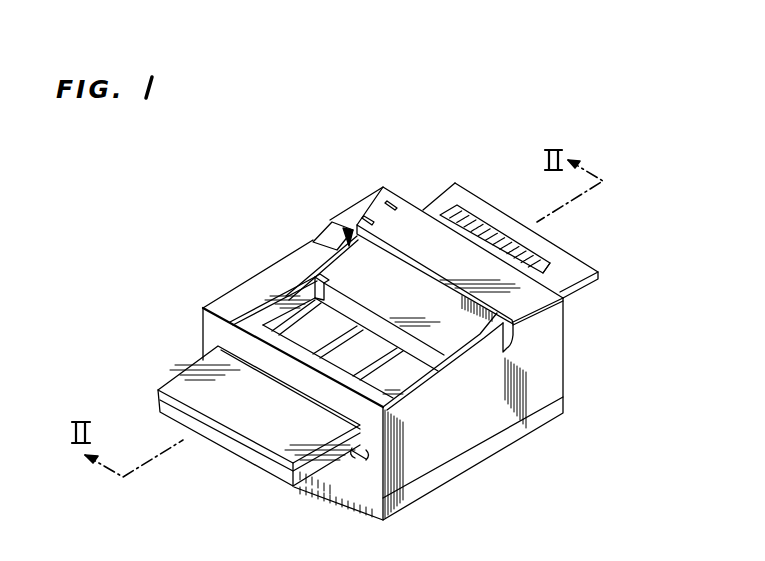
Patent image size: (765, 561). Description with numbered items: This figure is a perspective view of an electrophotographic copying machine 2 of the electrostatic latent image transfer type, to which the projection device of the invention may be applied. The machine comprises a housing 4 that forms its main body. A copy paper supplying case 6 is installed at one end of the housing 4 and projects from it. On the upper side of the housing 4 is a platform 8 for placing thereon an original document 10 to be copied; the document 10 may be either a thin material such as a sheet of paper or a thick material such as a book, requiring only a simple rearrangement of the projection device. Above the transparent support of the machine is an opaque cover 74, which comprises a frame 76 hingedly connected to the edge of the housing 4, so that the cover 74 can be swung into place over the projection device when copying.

The electrophotographic copying machine 2 is at (503, 172).
The housing 4 is at (550, 355).
The copy paper supplying case 6 is at (248, 427).
The platform 8 is at (545, 246).
The original document 10 is at (543, 259).
The opaque cover 74 is at (447, 258).
The frame 76 is at (403, 220).